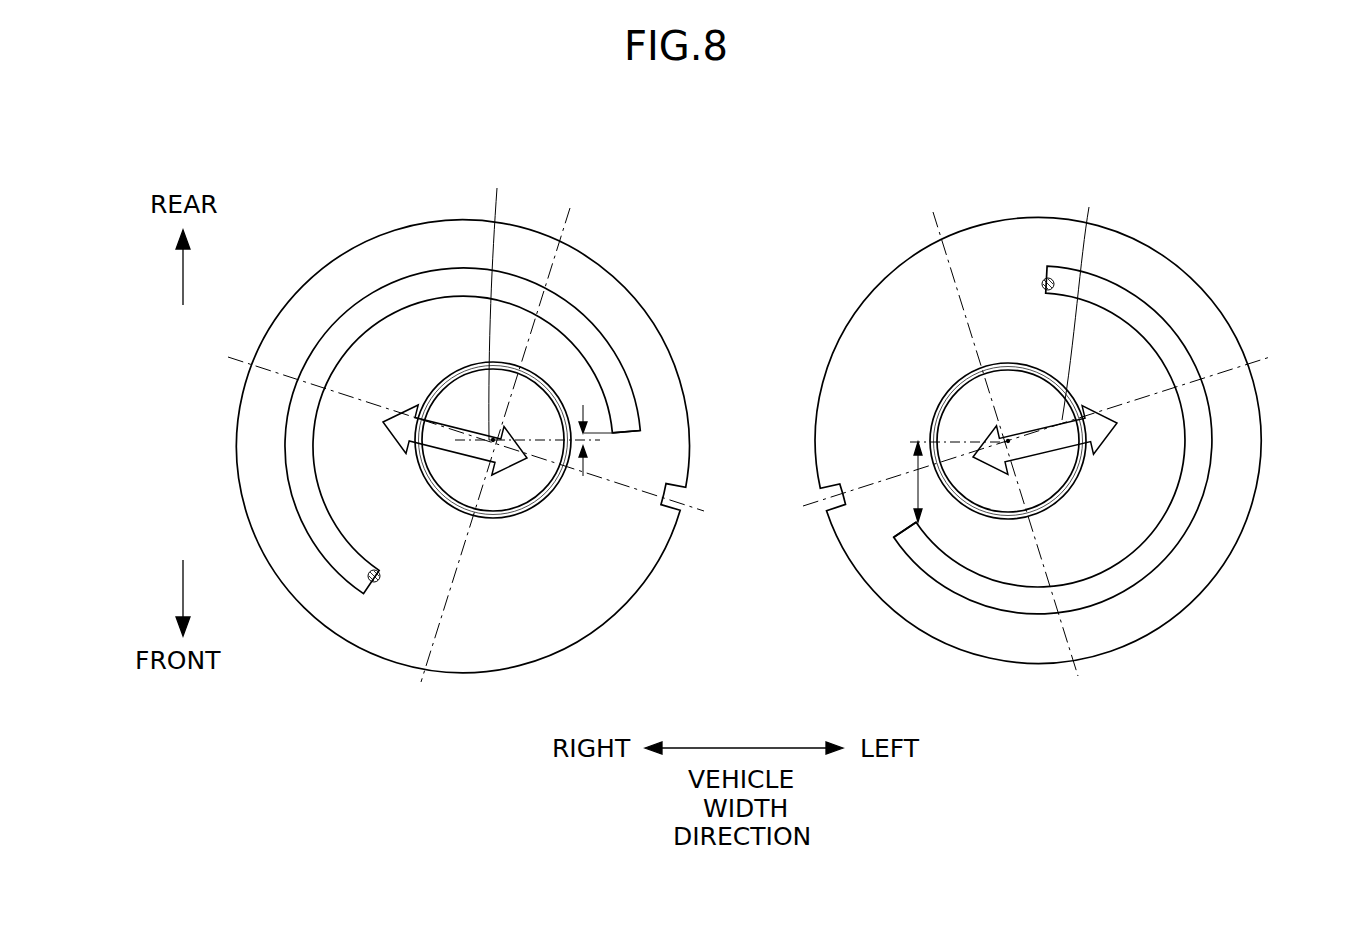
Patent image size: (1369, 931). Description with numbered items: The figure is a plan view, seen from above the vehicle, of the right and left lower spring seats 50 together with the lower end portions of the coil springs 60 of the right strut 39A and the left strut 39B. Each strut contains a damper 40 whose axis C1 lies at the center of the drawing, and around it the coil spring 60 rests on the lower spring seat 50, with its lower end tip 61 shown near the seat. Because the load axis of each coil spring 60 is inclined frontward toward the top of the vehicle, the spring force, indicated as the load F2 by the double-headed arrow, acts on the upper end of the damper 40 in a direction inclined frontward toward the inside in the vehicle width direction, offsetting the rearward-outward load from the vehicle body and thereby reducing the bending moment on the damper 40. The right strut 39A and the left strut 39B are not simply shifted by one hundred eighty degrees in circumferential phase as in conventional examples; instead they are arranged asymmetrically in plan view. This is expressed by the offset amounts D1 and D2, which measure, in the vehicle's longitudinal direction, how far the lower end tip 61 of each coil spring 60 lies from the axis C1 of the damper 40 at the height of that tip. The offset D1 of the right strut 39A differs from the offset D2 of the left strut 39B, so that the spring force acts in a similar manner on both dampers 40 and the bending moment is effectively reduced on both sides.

The right strut 39A is at (639, 210).
The left strut 39B is at (1243, 218).
The lower spring seat 50 is at (363, 242).
The coil spring 60 is at (590, 319).
The lower end tip 61 is at (636, 431).
The damper 40 is at (548, 507).
The load F2 is at (793, 301).
The axis of the damper C1 is at (492, 448).
The offset amount D1 is at (586, 450).
The offset amount D2 is at (915, 488).